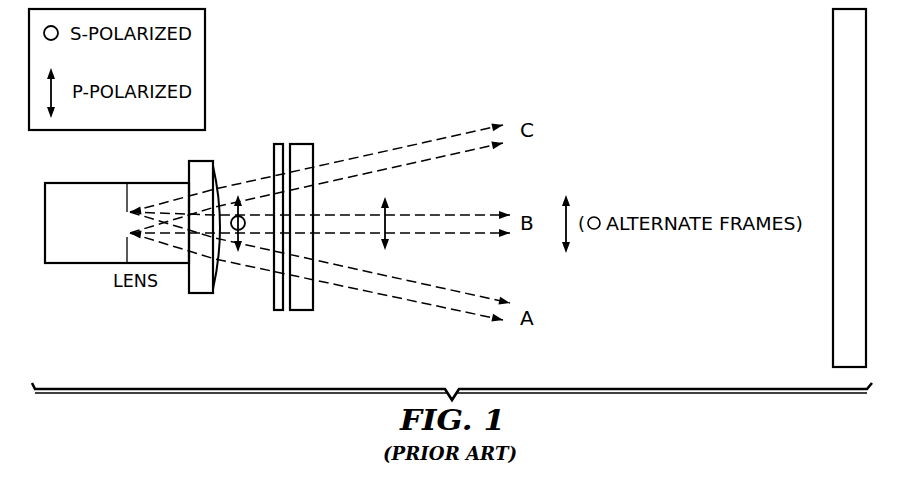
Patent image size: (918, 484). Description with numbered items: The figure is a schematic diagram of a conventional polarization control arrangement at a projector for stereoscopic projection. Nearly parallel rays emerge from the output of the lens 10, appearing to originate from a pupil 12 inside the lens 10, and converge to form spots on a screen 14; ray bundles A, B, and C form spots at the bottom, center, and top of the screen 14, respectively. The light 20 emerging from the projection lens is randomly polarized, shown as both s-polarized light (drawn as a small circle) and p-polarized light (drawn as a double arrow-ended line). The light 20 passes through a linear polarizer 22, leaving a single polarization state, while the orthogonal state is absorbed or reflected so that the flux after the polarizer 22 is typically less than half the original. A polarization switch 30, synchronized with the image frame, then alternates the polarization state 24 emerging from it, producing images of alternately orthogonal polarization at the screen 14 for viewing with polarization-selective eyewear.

The lens 10 is at (217, 266).
The pupil 12 is at (125, 233).
The screen 14 is at (832, 143).
The light 20 is at (248, 226).
The linear polarizer 22 is at (278, 143).
The polarization state 24 is at (386, 225).
The polarization switch 30 is at (300, 312).